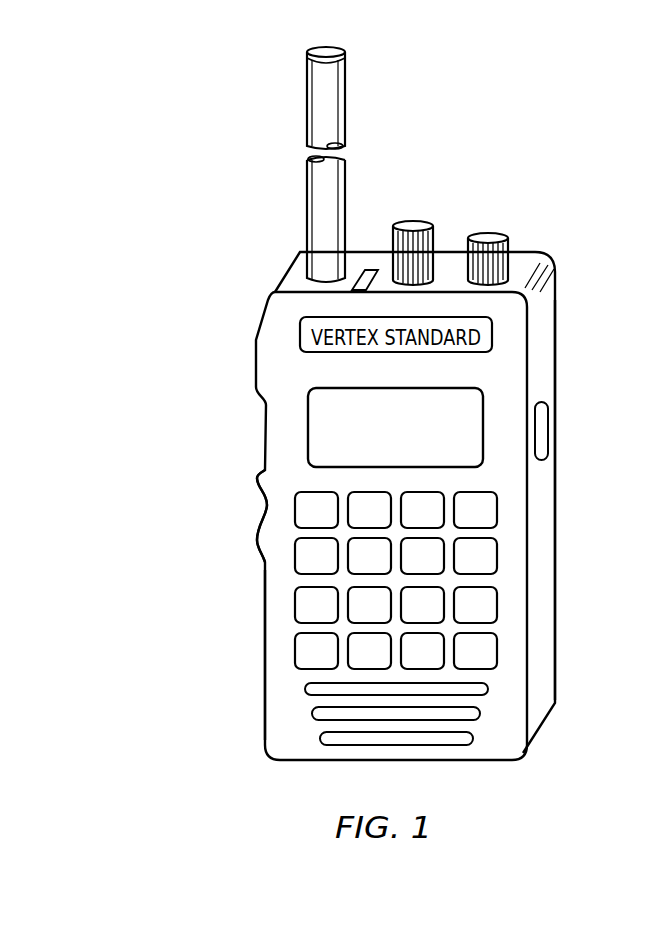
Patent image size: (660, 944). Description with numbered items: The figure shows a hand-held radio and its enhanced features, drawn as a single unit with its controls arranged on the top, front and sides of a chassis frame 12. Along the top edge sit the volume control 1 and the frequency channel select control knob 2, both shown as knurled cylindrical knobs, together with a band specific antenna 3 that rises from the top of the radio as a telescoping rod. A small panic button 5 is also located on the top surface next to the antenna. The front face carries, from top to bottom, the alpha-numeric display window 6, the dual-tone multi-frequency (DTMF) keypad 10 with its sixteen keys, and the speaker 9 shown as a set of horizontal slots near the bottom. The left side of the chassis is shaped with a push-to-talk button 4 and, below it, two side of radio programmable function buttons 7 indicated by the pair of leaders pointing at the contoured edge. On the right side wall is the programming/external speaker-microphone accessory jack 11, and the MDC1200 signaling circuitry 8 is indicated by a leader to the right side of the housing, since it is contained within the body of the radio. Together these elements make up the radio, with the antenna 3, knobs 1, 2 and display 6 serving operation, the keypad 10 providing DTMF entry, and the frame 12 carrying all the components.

The volume control 1 is at (502, 230).
The frequency channel select control knob 2 is at (428, 215).
The band specific antenna 3 is at (347, 165).
The push-to-talk button 4 is at (255, 357).
The panic button 5 is at (373, 268).
The alpha-numeric display window 6 is at (490, 398).
The programmable function buttons 7 is at (257, 530).
The MDC1200 signaling circuitry 8 is at (538, 582).
The speaker 9 is at (307, 705).
The dual-tone multi-frequency (DTMF) keypad 10 is at (502, 553).
The programming/external speaker-microphone accessory jack 11 is at (552, 418).
The chassis frame 12 is at (265, 603).